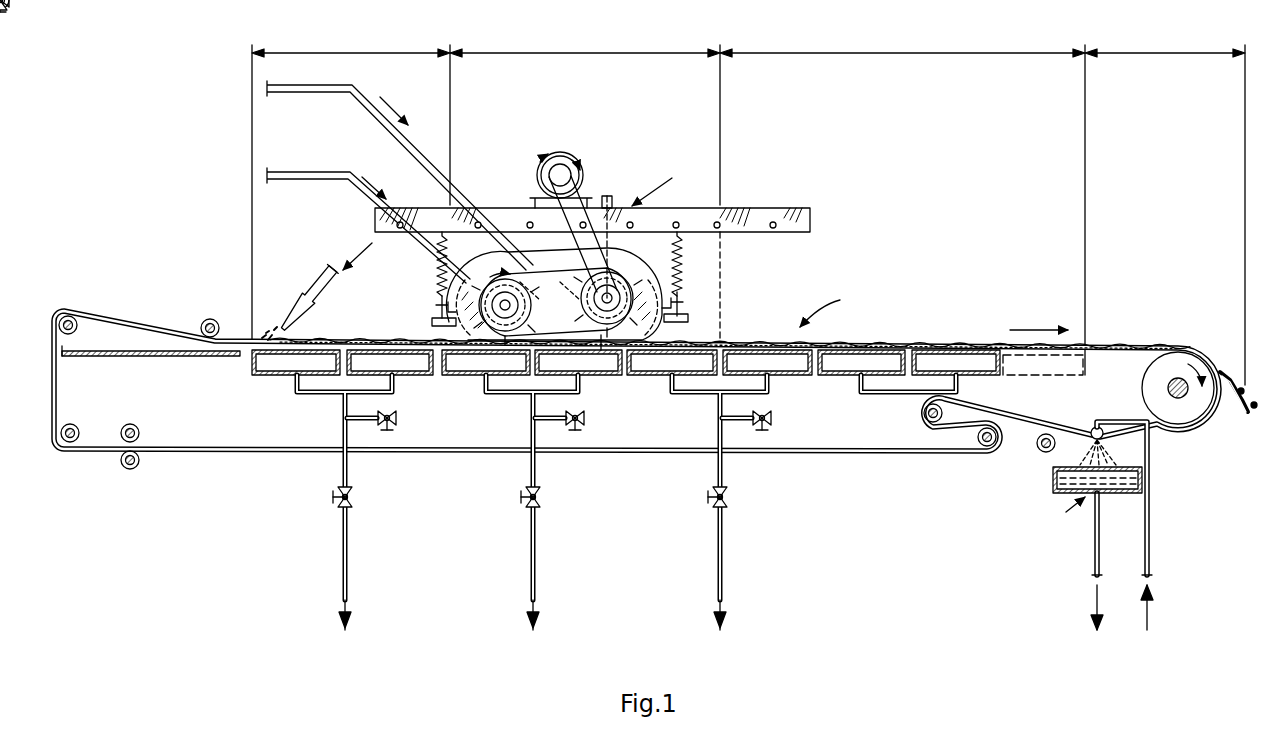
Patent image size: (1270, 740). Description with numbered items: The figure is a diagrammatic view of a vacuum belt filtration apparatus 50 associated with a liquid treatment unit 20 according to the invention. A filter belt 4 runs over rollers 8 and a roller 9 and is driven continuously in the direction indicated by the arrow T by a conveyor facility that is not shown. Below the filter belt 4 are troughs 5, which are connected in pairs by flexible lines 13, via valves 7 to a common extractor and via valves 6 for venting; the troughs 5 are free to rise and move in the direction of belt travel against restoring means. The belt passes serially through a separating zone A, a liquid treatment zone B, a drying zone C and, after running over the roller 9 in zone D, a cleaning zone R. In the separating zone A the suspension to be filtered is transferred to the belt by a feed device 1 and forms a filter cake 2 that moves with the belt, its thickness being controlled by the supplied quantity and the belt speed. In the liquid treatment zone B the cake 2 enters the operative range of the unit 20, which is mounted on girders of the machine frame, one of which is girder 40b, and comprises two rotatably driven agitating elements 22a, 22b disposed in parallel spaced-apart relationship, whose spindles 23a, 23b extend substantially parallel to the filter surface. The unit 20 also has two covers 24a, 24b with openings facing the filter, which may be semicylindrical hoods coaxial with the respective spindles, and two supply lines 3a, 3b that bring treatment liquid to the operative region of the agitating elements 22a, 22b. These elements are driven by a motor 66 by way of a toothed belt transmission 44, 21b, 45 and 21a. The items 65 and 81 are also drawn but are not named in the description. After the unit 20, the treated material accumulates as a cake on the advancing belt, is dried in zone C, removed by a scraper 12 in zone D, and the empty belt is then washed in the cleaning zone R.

The feed device 1 is at (301, 300).
The filter cake 2 is at (336, 342).
The supply line 3a is at (307, 179).
The supply line 3b is at (301, 92).
The filter belt 4 is at (152, 317).
The troughs 5 is at (270, 377).
The valves 6 is at (400, 420).
The valves 7 is at (351, 500).
The rollers 8 is at (210, 319).
The roller 9 is at (1140, 388).
The scraper 12 is at (1241, 408).
The flexible lines 13 is at (343, 414).
The liquid treatment unit 20 is at (575, 248).
The toothed belt transmission element 21a is at (474, 298).
The toothed belt transmission element 21b is at (660, 288).
The agitating element 22a is at (474, 321).
The agitating element 22b is at (632, 318).
The spindle 23a is at (460, 318).
The spindle 23b is at (662, 317).
The cover 24a is at (482, 274).
The cover 24b is at (668, 272).
The girder 40b is at (814, 220).
The toothed belt transmission element 44 is at (551, 216).
The toothed belt transmission element 45 is at (530, 252).
The vacuum belt filtration apparatus 50 is at (836, 304).
The adjusting rod 65 is at (612, 197).
The motor 66 is at (566, 153).
The scraper 81 is at (602, 346).
The separating zone A is at (325, 53).
The liquid treatment zone B is at (566, 53).
The drying zone C is at (880, 53).
The zone D is at (1146, 53).
The direction of belt movement T is at (1039, 317).
The cleaning zone R is at (1103, 526).